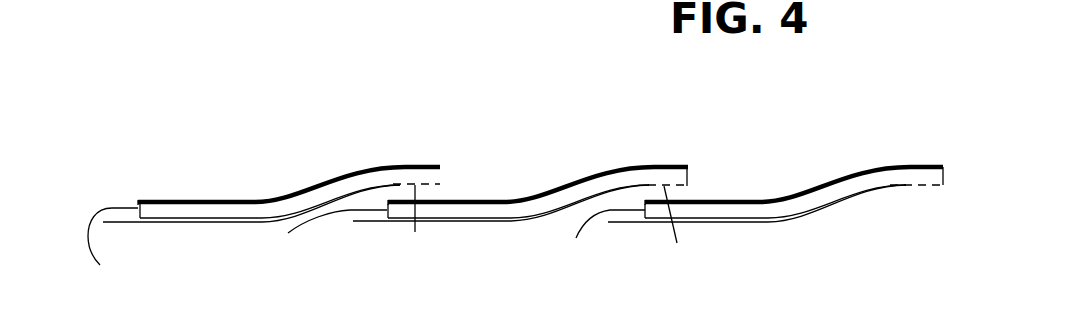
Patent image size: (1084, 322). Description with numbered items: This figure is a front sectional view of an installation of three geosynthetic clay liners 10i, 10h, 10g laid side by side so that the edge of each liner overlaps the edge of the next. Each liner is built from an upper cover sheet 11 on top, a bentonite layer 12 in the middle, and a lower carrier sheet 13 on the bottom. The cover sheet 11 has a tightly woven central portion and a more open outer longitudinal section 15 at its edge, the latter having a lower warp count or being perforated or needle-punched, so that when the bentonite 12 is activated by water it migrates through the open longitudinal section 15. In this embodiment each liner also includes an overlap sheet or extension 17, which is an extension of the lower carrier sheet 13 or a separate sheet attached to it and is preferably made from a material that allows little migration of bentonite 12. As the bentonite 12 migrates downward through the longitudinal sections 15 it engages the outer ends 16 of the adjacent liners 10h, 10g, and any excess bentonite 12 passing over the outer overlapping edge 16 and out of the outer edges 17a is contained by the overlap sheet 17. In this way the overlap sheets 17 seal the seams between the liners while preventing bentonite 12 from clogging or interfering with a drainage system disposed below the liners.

The geosynthetic clay liner 10i is at (249, 169).
The geosynthetic clay liner 10h is at (582, 140).
The geosynthetic clay liner 10g is at (853, 149).
The upper cover sheet 11 is at (157, 194).
The bentonite layer 12 is at (208, 210).
The lower carrier sheet 13 is at (200, 231).
The outer longitudinal section 15 is at (547, 228).
The outer end 16 is at (440, 200).
The overlap sheet 17 is at (117, 222).
The outer edge 17a is at (366, 245).